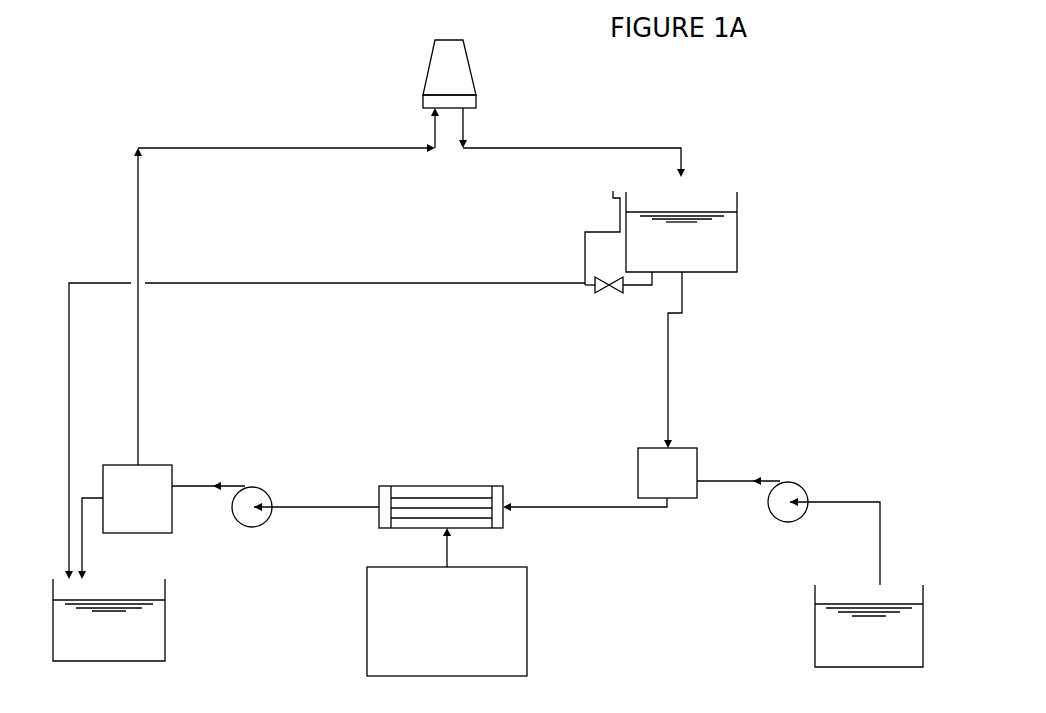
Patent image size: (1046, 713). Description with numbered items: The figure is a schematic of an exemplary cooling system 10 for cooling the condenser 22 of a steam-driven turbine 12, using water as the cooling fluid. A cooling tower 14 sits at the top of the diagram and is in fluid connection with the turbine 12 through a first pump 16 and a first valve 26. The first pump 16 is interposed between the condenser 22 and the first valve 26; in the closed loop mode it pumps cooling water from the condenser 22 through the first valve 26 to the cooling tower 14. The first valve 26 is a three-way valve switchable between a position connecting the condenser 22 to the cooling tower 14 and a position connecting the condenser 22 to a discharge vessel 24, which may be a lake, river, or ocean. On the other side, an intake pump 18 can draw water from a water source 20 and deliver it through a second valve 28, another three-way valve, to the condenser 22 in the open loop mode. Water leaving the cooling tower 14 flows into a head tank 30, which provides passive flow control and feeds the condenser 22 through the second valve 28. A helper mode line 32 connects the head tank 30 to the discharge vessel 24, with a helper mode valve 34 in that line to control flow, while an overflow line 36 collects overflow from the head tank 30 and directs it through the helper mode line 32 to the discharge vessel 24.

The cooling system 10 is at (120, 74).
The turbine 12 is at (439, 661).
The cooling tower 14 is at (440, 79).
The first pump 16 is at (270, 486).
The intake pump 18 is at (800, 483).
The water source 20 is at (864, 647).
The condenser 22 is at (407, 486).
The discharge vessel 24 is at (104, 642).
The first valve 26 is at (157, 465).
The second valve 28 is at (638, 462).
The head tank 30 is at (675, 256).
The helper mode line 32 is at (293, 282).
The helper mode valve 34 is at (615, 292).
The overflow line 36 is at (585, 243).